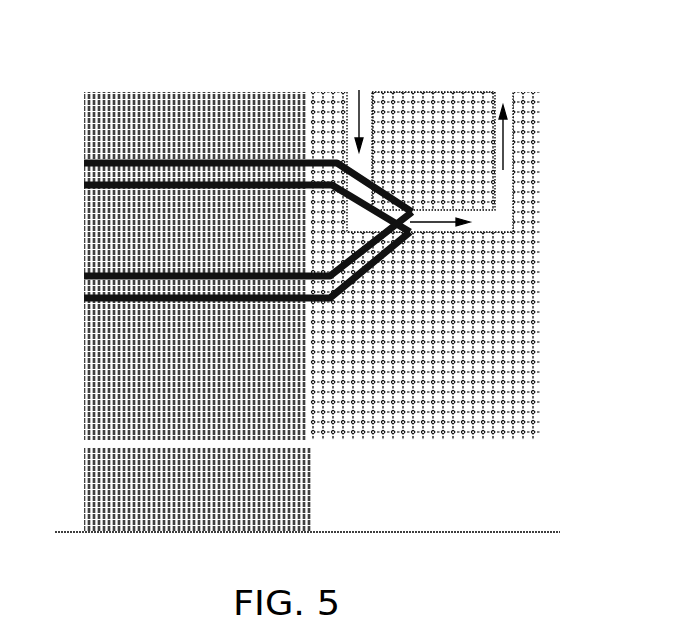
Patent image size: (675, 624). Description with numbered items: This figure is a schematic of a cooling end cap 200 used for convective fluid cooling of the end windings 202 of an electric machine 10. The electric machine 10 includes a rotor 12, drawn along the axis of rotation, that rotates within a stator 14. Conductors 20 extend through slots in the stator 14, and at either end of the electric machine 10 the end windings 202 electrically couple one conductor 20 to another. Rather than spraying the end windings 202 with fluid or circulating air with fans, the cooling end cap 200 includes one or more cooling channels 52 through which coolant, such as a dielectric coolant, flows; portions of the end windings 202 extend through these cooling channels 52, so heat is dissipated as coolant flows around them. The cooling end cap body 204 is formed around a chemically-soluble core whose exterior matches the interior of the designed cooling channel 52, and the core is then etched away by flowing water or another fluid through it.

The electric machine 10 is at (106, 36).
The rotor 12 is at (84, 489).
The stator 14 is at (84, 405).
The conductors 20 is at (84, 162).
The cooling channels 52 is at (505, 215).
The cooling end cap 200 is at (426, 92).
The end windings 202 is at (407, 287).
The cooling end cap body 204 is at (532, 372).